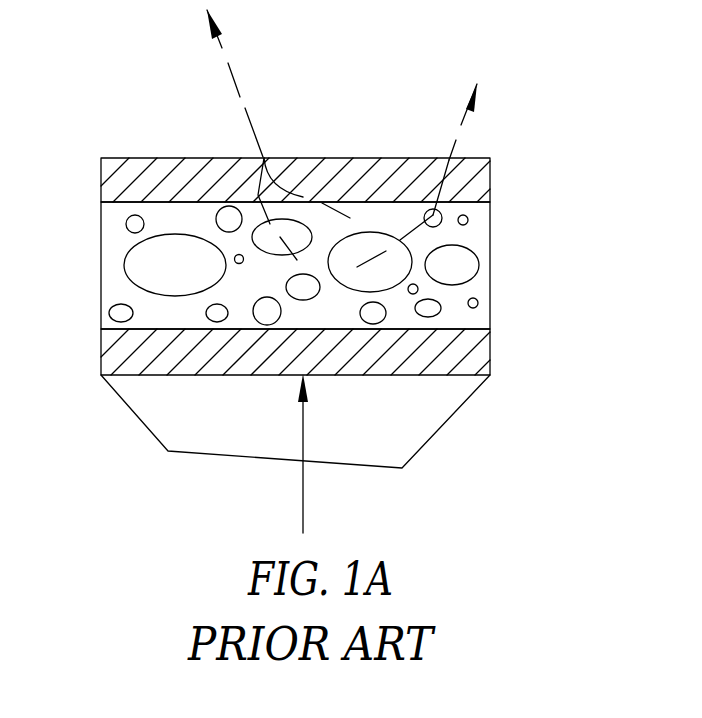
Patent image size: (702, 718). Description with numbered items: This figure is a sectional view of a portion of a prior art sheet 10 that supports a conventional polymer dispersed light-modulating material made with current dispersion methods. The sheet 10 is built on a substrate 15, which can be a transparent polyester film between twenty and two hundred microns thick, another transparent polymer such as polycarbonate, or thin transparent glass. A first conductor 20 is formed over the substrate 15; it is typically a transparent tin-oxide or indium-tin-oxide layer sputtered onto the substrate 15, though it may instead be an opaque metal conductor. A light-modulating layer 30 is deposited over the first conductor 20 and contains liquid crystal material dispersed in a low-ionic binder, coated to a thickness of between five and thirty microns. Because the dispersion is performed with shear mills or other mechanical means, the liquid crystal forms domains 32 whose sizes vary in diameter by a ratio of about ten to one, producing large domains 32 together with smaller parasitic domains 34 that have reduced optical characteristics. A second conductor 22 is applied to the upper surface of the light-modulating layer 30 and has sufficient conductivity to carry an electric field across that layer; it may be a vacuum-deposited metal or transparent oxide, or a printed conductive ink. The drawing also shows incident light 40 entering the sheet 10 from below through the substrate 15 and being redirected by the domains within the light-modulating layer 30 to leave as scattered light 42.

The sheet 10 is at (178, 106).
The substrate 15 is at (124, 399).
The first conductor 20 is at (102, 347).
The second conductor 22 is at (101, 201).
The light-modulating layer 30 is at (100, 205).
The domains 32 is at (458, 262).
The parasitic domains 34 is at (433, 313).
The incident light 40 is at (305, 505).
The scattered light 42 is at (272, 136).